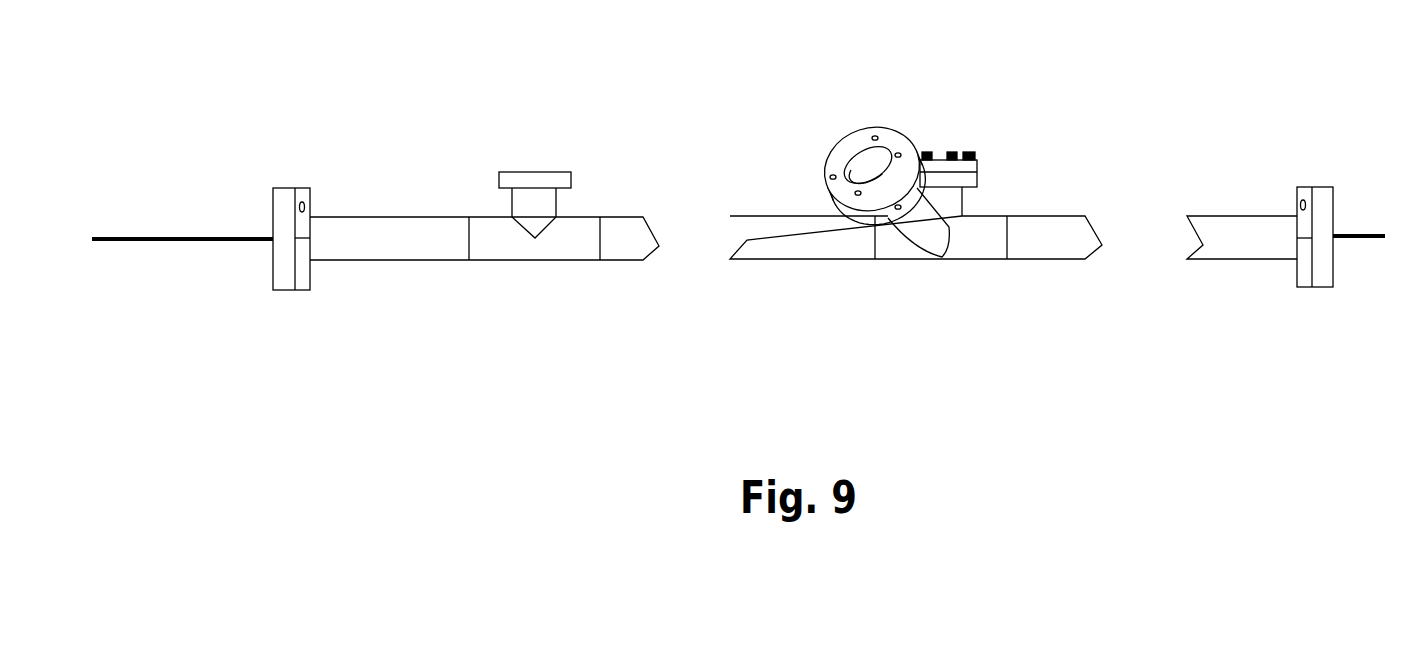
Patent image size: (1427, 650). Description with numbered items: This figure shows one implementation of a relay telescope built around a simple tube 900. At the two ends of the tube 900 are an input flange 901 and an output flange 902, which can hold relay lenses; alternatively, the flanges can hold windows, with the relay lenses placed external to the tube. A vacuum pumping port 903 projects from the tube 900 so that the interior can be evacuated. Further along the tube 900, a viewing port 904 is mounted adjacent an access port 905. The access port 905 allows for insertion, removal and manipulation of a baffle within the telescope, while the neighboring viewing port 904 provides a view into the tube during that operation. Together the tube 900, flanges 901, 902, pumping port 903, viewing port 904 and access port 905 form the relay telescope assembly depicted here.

The tube 900 is at (408, 247).
The input flange 901 is at (282, 205).
The output flange 902 is at (1320, 200).
The vacuum pumping port 903 is at (503, 180).
The viewing port 904 is at (893, 132).
The access port 905 is at (968, 167).